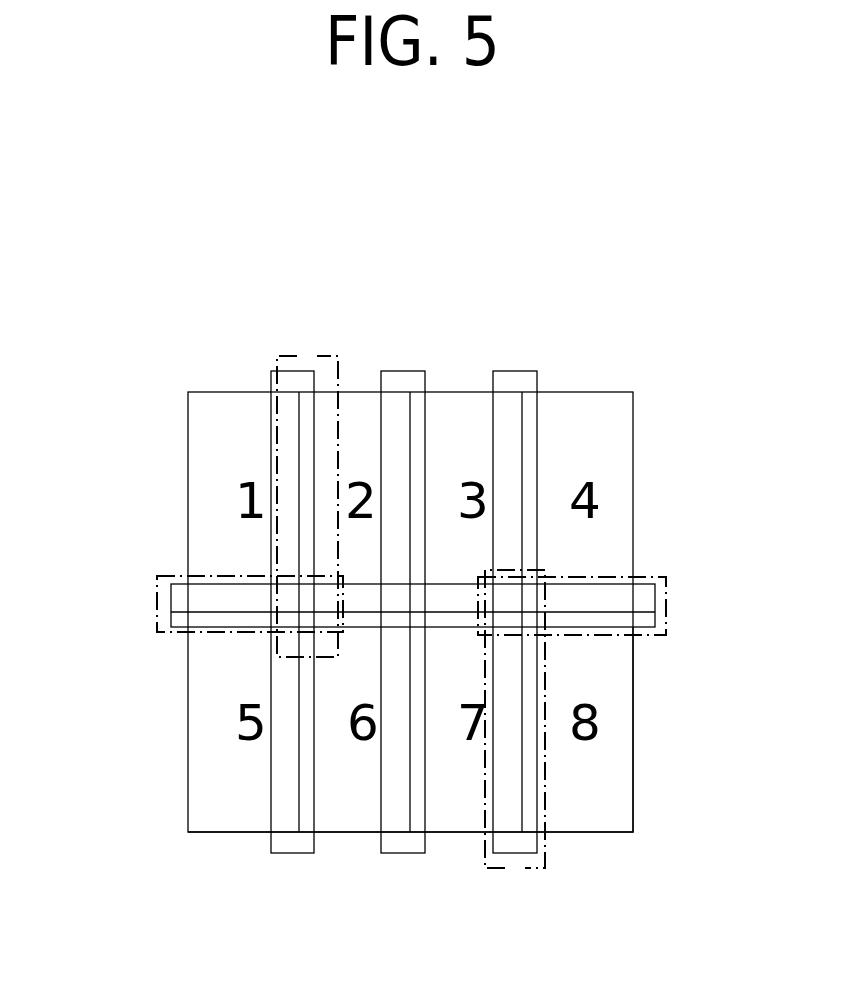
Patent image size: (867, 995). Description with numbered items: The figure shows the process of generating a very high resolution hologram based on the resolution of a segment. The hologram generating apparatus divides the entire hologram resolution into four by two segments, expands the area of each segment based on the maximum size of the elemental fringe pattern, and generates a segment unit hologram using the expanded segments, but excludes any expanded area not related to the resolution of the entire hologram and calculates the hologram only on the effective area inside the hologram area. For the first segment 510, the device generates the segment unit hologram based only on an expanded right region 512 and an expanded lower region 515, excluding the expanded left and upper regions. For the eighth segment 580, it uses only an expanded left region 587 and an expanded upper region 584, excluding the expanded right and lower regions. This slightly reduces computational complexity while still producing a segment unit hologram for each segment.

The first segment 510 is at (188, 418).
The expanded right region 512 is at (305, 356).
The expanded lower region 515 is at (157, 588).
The 8th segment 580 is at (633, 720).
The expanded upper region 584 is at (667, 618).
The expanded left region 587 is at (515, 868).